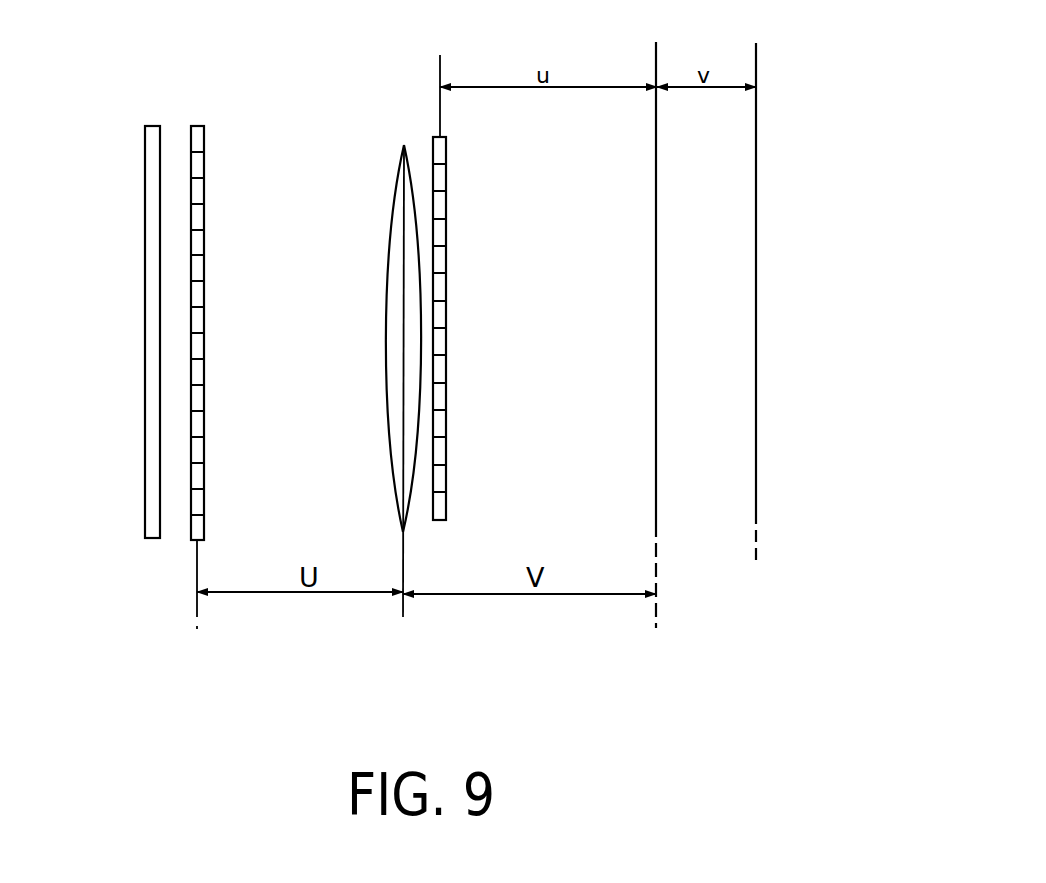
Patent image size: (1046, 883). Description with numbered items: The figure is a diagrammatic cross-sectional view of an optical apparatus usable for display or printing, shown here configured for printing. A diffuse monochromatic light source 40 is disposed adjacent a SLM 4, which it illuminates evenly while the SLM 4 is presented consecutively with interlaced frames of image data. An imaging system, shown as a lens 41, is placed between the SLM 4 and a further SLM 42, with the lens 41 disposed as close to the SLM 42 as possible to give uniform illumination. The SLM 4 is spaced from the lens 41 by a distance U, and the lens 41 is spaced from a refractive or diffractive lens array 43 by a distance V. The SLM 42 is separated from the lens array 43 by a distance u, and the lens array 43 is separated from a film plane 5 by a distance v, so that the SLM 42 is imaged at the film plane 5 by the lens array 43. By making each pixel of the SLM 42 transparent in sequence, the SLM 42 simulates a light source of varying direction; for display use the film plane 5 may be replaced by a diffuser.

The SLM 4 is at (196, 126).
The film plane 5 is at (756, 527).
The diffuse monochromatic light source 40 is at (153, 434).
The lens 41 is at (404, 145).
The further SLM 42 is at (446, 507).
The refractive or diffractive lens array 43 is at (656, 523).